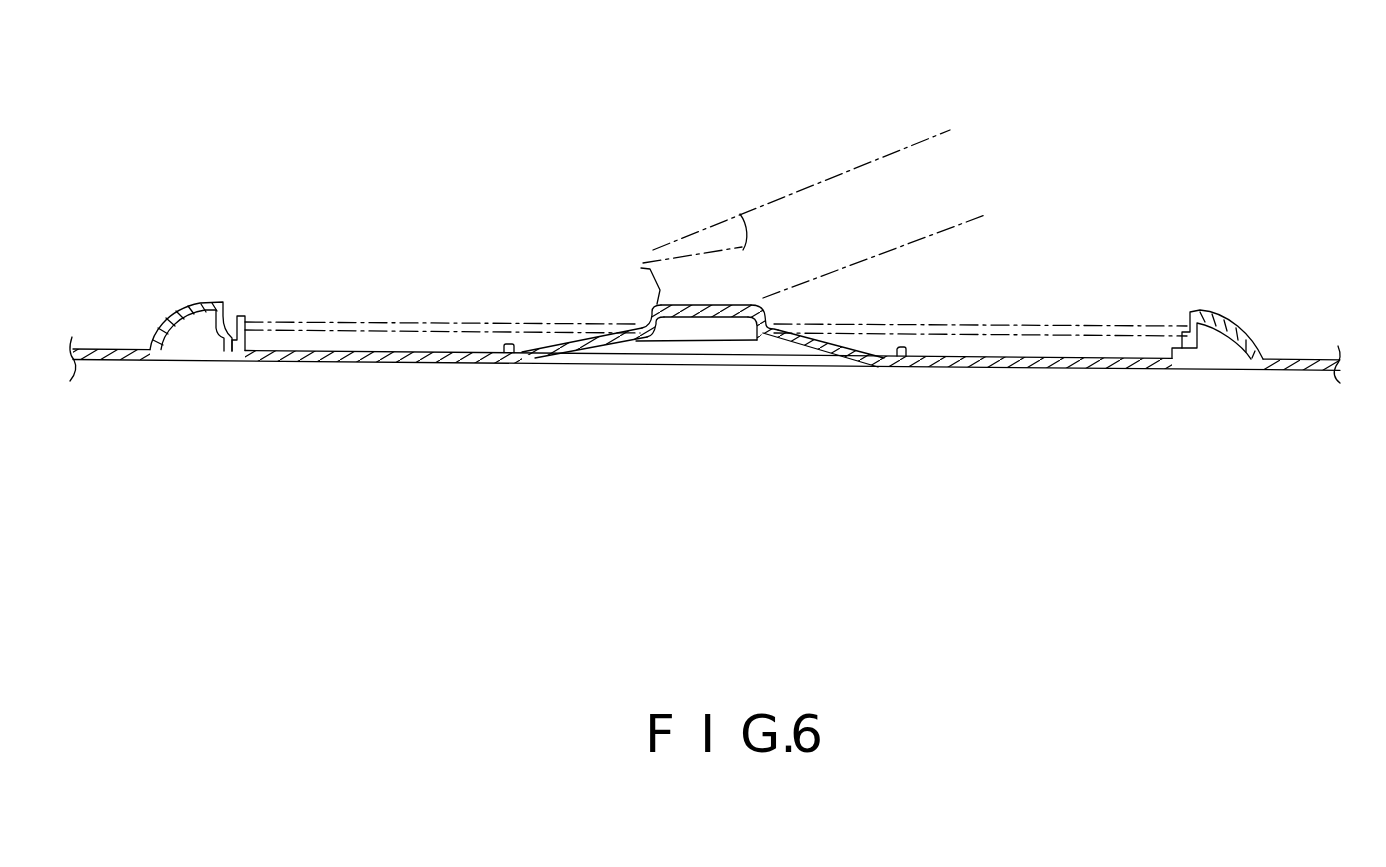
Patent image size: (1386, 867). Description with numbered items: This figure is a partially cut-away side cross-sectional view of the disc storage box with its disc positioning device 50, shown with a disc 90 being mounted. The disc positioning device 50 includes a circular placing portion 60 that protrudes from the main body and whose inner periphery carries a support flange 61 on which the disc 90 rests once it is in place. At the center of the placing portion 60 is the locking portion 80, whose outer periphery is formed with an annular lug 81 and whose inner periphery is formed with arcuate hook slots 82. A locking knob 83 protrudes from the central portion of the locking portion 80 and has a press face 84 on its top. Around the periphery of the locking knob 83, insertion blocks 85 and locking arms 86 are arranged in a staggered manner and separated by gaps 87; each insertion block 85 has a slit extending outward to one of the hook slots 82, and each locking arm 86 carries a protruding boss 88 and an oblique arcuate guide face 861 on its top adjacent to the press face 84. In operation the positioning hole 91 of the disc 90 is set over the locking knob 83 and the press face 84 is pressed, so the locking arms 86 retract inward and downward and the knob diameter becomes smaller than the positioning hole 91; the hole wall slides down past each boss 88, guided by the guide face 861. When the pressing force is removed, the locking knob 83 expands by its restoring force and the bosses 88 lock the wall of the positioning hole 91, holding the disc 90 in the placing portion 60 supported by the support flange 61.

The disc positioning device 50 is at (1311, 251).
The placing portion 60 is at (187, 310).
The support flange 61 is at (237, 320).
The locking portion 80 is at (546, 127).
The annular lug 81 is at (908, 358).
The arcuate hook slots 82 is at (571, 340).
The locking knob 83 is at (748, 275).
The press face 84 is at (708, 307).
The insertion blocks 85 is at (737, 322).
The locking arms 86 is at (622, 340).
The oblique arcuate guide face 861 is at (655, 300).
The gaps 87 is at (668, 307).
The protruding boss 88 is at (645, 322).
The disc 90 is at (1023, 332).
The positioning hole 91 is at (800, 364).